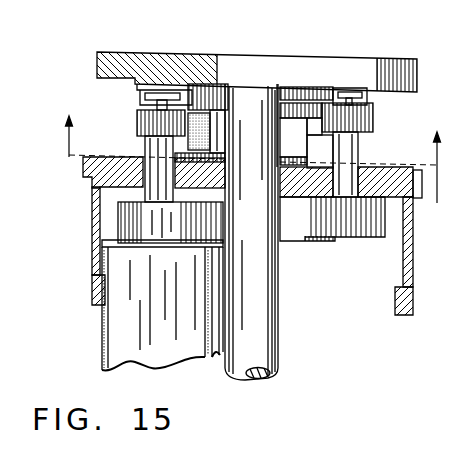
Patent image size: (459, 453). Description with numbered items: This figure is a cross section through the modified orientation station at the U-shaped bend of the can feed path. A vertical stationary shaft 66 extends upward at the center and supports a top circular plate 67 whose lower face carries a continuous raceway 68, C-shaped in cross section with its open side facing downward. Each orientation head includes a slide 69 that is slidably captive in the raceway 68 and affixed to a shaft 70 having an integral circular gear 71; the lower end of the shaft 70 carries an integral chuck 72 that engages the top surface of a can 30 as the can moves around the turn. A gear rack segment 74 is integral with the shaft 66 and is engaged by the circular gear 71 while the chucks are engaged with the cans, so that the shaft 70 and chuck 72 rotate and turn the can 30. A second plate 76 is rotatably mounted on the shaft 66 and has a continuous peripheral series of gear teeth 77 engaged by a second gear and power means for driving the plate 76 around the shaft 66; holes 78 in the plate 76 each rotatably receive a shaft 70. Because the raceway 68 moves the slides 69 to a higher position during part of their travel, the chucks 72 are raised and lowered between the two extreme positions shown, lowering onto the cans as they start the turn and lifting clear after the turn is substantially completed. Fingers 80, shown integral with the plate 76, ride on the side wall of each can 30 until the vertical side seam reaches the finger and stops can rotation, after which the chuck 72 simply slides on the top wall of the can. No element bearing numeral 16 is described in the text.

The support wall 16 is at (97, 195).
The can 30 is at (130, 318).
The vertical stationary shaft 66 is at (257, 328).
The top circular plate 67 is at (263, 68).
The raceway 68 is at (140, 92).
The slide 69 is at (162, 93).
The shaft 70 is at (152, 148).
The circular gear 71 is at (142, 118).
The chuck 72 is at (137, 215).
The gear rack segment 74 is at (200, 133).
The second plate 76 is at (377, 178).
The gear teeth 77 is at (90, 192).
The holes 78 is at (150, 162).
The fingers 80 is at (97, 288).